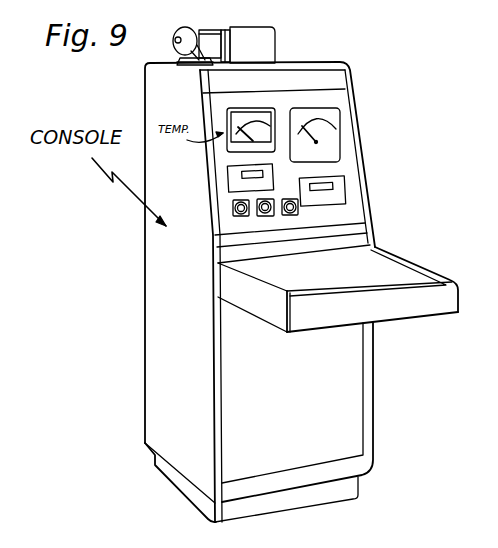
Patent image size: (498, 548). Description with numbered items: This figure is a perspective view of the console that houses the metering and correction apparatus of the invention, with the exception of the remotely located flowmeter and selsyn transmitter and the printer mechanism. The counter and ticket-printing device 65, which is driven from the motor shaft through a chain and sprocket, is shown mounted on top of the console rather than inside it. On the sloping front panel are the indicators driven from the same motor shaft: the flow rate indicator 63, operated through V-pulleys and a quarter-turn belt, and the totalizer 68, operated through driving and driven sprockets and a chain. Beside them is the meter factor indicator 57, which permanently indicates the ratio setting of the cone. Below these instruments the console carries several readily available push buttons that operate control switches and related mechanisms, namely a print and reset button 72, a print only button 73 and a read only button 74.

The counter and ticket-printing device 65 is at (262, 26).
The flow rate indicator 63 is at (331, 137).
The totalizer 68 is at (228, 174).
The meter factor indicator 57 is at (340, 187).
The print and reset button 72 is at (237, 216).
The print only button 73 is at (263, 216).
The read only button 74 is at (291, 215).